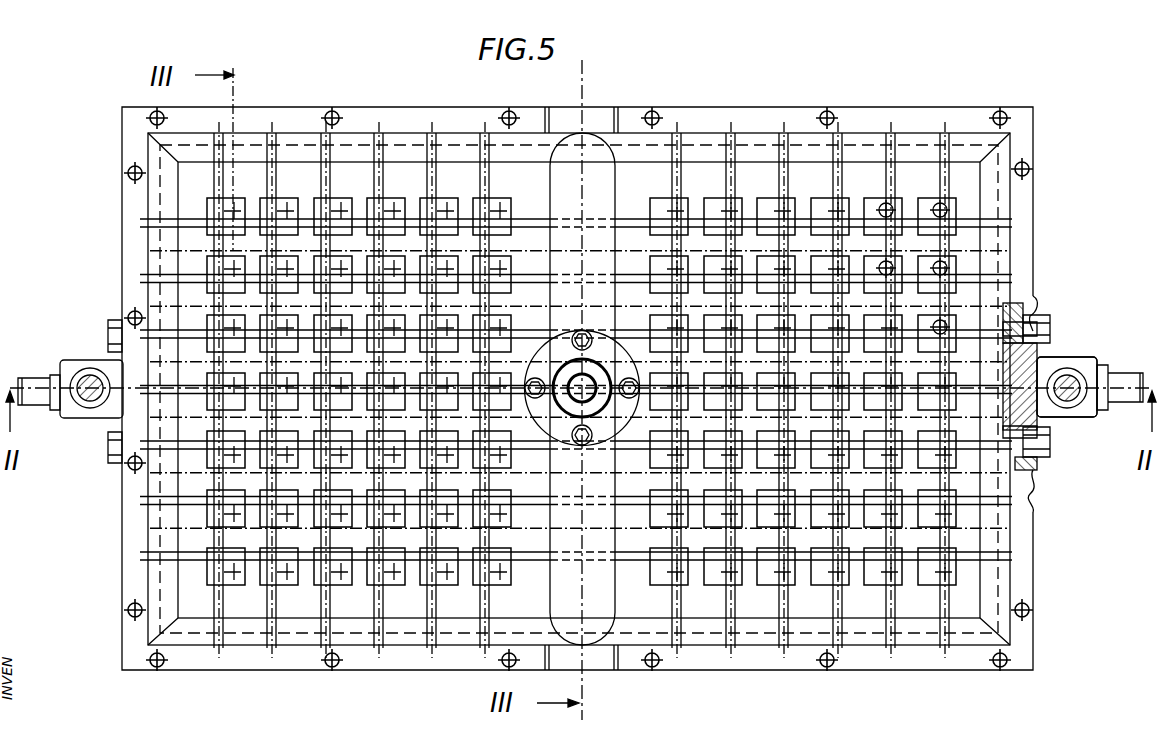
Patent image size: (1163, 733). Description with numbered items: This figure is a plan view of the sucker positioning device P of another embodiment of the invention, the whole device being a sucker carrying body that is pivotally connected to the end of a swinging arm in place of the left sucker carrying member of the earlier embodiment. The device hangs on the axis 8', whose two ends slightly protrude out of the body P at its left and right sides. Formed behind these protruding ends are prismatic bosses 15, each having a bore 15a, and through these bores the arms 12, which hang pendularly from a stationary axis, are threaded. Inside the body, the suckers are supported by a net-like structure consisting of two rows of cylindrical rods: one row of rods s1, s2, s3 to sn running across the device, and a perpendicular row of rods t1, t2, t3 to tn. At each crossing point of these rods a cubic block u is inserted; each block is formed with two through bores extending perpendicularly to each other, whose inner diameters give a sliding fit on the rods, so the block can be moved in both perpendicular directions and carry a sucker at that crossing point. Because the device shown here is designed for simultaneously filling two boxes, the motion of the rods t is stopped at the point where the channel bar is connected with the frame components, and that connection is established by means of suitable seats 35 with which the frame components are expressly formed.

The sucker positioning device P is at (928, 100).
The axis 8' is at (580, 387).
The arm 12 is at (86, 370).
The prismatic boss 15 is at (62, 372).
The bore 15a is at (1079, 368).
The seat 35 is at (617, 672).
The cubic block u is at (838, 208).
The cylindrical rod t1 is at (218, 185).
The cylindrical rod t2 is at (273, 185).
The cylindrical rod t3 is at (328, 185).
The cylindrical rod tn is at (943, 181).
The cylindrical rod s1 is at (963, 224).
The cylindrical rod s2 is at (963, 280).
The cylindrical rod s3 is at (963, 336).
The cylindrical rod sn is at (963, 562).